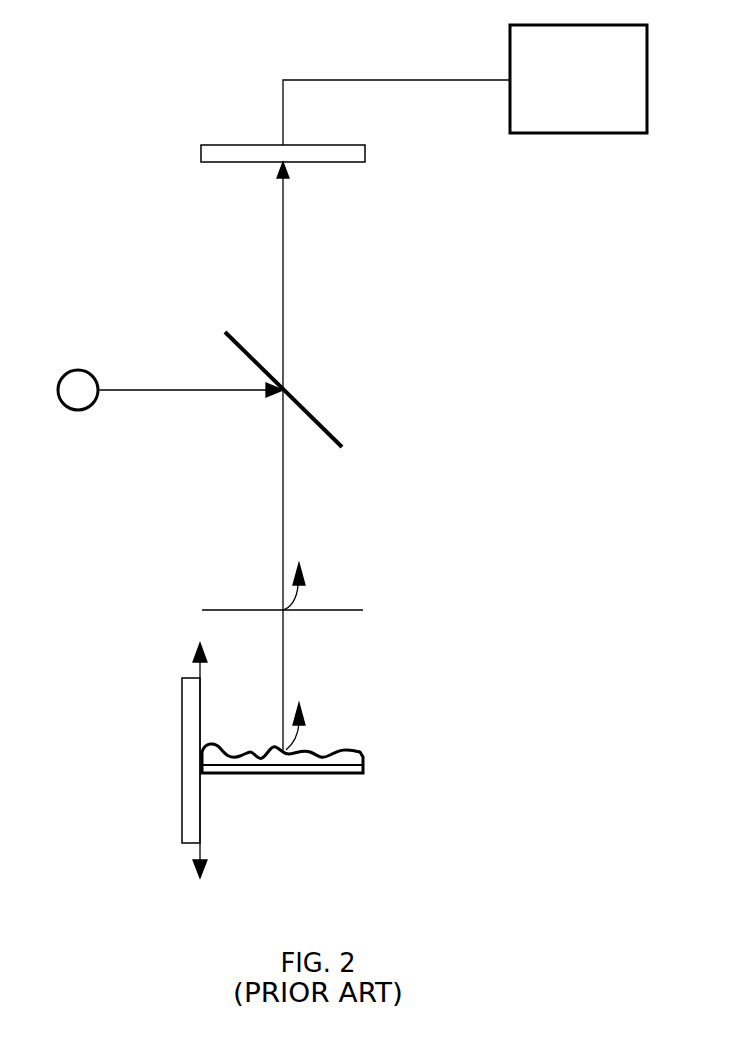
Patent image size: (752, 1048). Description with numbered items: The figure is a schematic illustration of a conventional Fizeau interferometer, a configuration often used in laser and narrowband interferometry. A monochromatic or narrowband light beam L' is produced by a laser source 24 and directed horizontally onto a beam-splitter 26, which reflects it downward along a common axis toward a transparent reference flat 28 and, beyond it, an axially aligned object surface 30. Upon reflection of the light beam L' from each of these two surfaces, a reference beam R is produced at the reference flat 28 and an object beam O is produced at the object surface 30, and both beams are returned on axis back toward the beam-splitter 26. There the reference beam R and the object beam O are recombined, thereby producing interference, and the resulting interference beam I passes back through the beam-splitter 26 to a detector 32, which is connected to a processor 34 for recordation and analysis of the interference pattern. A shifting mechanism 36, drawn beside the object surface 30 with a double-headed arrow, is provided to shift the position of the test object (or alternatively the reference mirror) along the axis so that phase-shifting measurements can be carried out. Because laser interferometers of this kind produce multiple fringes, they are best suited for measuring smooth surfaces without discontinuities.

The laser source 24 is at (80, 397).
The beam-splitter 26 is at (340, 440).
The transparent reference flat 28 is at (223, 610).
The object surface 30 is at (357, 748).
The detector 32 is at (365, 152).
The processor 34 is at (585, 123).
The shifting mechanism 36 is at (182, 760).
The interference beam I is at (283, 235).
The reference beam R is at (303, 590).
The object beam O is at (295, 730).
The light beam L' is at (190, 346).